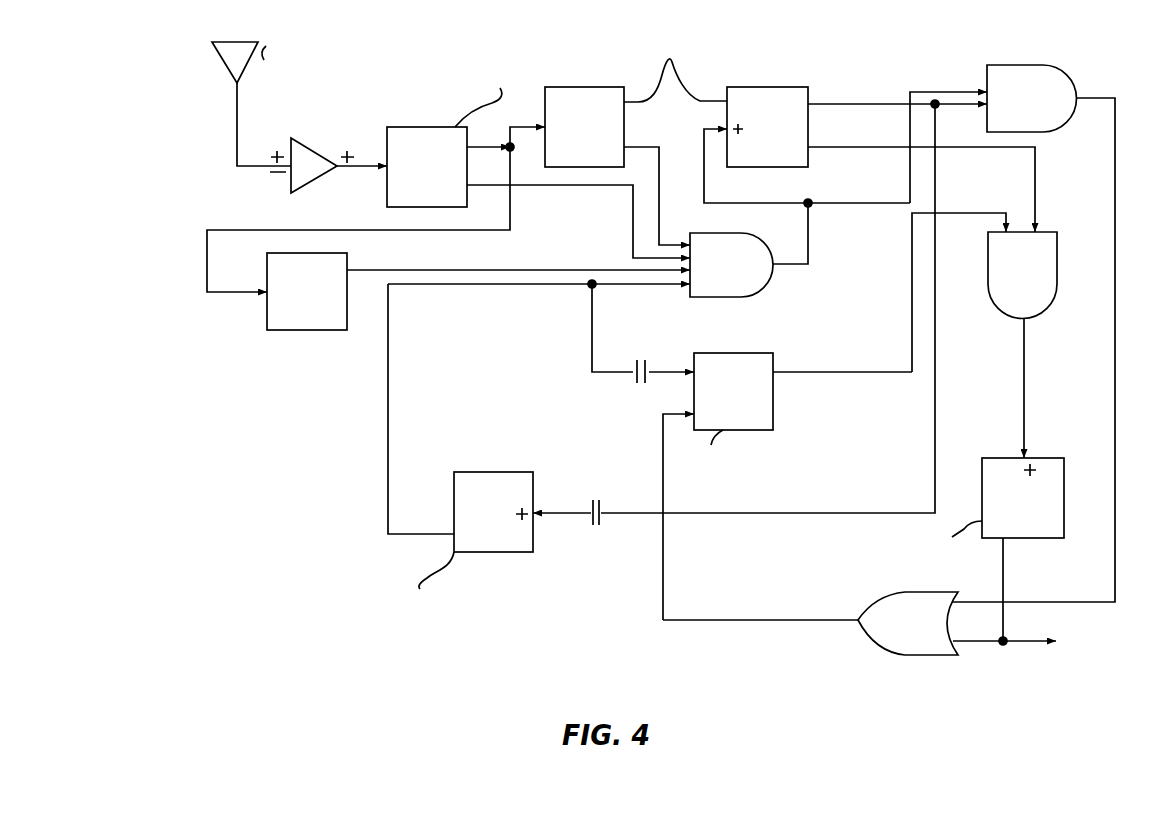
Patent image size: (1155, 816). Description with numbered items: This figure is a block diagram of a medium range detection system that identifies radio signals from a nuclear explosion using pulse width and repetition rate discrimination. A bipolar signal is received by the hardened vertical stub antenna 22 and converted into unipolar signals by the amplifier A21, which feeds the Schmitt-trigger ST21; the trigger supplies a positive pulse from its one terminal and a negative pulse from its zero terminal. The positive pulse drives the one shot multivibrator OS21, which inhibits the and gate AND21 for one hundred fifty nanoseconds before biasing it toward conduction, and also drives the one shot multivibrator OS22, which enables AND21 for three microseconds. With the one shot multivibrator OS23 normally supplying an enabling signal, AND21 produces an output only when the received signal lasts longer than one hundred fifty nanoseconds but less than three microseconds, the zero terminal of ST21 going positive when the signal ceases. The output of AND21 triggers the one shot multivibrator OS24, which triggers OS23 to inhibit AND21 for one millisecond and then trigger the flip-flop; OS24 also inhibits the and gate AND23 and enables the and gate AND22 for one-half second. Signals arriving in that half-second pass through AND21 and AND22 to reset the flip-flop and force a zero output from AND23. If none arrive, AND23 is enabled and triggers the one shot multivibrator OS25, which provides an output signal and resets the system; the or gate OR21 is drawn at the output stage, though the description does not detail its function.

The antenna 22 is at (210, 54).
The amplifier A21 is at (308, 143).
The Schmitt-trigger ST21 is at (396, 127).
The one shot multivibrator OS21 is at (563, 87).
The one shot multivibrator OS22 is at (350, 263).
The one shot multivibrator OS23 is at (477, 472).
The one shot multivibrator OS24 is at (738, 87).
The one shot multivibrator OS25 is at (1028, 458).
The and gate AND21 is at (703, 233).
The and gate AND22 is at (1004, 65).
The and gate AND23 is at (990, 303).
The OR gate OR21 is at (892, 655).